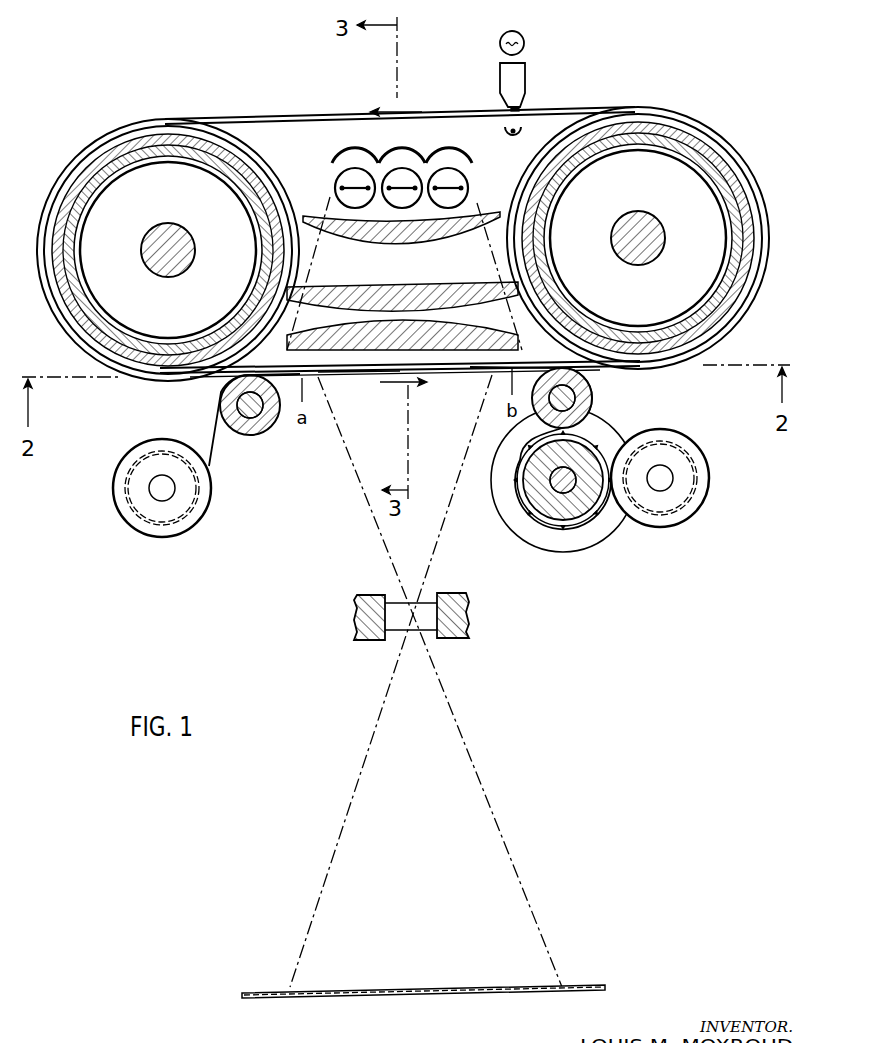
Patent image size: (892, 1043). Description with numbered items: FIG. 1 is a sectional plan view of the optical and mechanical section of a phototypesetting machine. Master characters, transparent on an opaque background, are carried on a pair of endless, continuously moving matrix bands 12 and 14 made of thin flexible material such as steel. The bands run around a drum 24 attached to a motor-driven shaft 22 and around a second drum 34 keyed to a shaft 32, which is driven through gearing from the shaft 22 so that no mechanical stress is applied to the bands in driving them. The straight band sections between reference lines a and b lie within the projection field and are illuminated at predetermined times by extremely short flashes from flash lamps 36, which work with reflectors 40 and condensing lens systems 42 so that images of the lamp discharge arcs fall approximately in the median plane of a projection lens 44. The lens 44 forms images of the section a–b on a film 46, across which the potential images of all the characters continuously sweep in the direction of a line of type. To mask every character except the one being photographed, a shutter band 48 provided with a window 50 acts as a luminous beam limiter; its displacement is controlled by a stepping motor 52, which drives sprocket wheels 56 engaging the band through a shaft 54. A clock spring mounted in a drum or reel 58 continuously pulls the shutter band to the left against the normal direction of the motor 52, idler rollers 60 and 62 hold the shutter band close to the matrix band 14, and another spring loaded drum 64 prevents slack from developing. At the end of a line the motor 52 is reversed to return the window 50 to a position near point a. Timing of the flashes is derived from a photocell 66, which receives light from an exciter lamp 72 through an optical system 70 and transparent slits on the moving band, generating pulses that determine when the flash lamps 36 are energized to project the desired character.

The matrix band 12 is at (243, 118).
The matrix band 14 is at (290, 118).
The shaft 22 is at (193, 239).
The drum 24 is at (96, 189).
The shaft 32 is at (662, 228).
The drum 34 is at (578, 166).
The flash lamps 36 is at (432, 165).
The reflectors 40 is at (362, 152).
The condensing lens systems 42 is at (418, 247).
The projection lens 44 is at (395, 633).
The film 46 is at (575, 982).
The shutter band 48 is at (475, 376).
The window 50 is at (330, 378).
The stepping motor 52 is at (598, 546).
The shaft 54 is at (545, 484).
The sprocket wheels 56 is at (560, 512).
The drum or reel 58 is at (212, 505).
The idler roller 60 is at (225, 402).
The idler roller 62 is at (588, 397).
The spring loaded drum 64 is at (710, 484).
The photocell 66 is at (503, 134).
The optical system 70 is at (526, 82).
The exciter lamp 72 is at (524, 36).